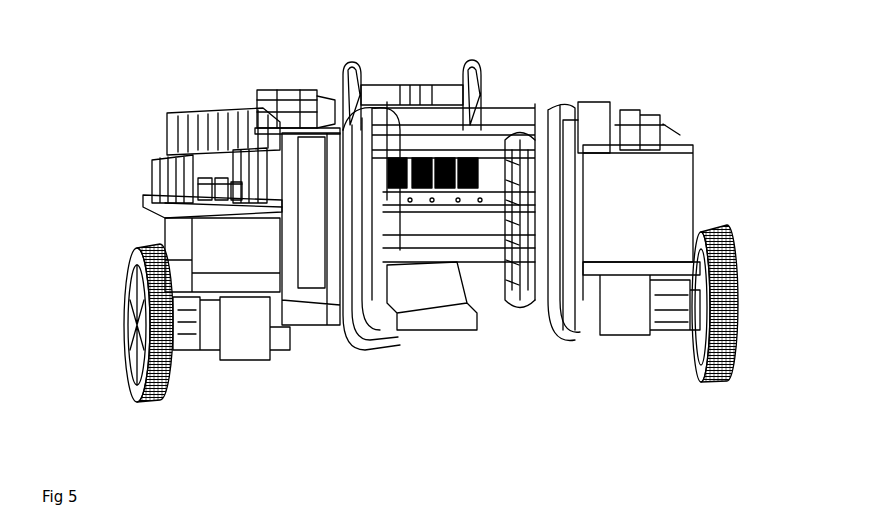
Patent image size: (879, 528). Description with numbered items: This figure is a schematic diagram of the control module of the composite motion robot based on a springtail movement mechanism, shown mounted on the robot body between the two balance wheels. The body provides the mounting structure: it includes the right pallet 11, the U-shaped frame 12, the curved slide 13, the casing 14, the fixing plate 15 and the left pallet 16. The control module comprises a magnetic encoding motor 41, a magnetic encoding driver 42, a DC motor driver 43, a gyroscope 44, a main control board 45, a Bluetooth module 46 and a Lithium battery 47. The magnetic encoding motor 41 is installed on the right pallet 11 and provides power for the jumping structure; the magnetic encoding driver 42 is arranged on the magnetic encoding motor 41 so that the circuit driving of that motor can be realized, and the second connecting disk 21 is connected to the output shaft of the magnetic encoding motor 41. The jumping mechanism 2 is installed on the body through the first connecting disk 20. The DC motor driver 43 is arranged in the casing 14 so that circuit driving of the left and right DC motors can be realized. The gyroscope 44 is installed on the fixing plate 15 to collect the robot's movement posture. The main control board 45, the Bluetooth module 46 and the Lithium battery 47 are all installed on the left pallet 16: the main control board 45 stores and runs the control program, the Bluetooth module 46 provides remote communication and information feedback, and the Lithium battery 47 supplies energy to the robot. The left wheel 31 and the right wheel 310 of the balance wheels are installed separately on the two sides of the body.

The jumping mechanism 2 is at (485, 128).
The right pallet 11 is at (663, 268).
The U-shaped frame 12 is at (532, 297).
The curved slide 13 is at (417, 298).
The casing 14 is at (304, 305).
The fixing plate 15 is at (174, 133).
The left pallet 16 is at (220, 283).
The first connecting disk 20 is at (362, 240).
The second connecting disk 21 is at (545, 232).
The left wheel 31 is at (143, 330).
The magnetic encoding motor 41 is at (658, 193).
The magnetic encoding driver 42 is at (658, 148).
The DC motor driver 43 is at (300, 106).
The gyroscope 44 is at (290, 117).
The main control board 45 is at (210, 193).
The Bluetooth module 46 is at (213, 218).
The Lithium battery 47 is at (210, 247).
The right wheel 310 is at (727, 335).